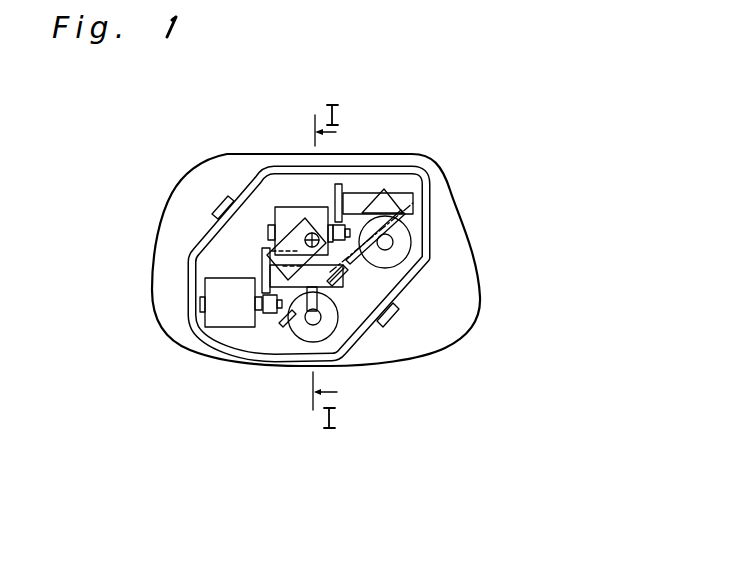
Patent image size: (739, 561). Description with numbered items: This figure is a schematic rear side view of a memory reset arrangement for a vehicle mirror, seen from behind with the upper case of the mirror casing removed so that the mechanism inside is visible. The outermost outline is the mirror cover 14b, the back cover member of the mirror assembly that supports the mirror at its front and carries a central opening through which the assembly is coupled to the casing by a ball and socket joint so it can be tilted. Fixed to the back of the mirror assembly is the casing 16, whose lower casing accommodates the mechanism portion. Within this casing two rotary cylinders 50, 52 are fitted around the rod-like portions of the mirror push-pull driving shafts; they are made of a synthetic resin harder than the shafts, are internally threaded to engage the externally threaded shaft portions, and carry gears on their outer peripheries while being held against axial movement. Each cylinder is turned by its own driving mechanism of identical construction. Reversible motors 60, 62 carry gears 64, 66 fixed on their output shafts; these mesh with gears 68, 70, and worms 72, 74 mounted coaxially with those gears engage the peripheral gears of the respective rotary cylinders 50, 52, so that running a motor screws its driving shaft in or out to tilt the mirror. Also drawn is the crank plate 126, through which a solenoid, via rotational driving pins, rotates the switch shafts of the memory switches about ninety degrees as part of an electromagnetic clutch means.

The mirror cover 14b is at (460, 270).
The casing 16 is at (369, 339).
The rotary cylinder 50 is at (330, 322).
The rotary cylinder 52 is at (402, 237).
The reversible motor 60 is at (222, 312).
The reversible motor 62 is at (290, 210).
The gear 64 is at (269, 316).
The gear 66 is at (353, 260).
The gear 68 is at (267, 257).
The gear 70 is at (340, 193).
The worm 72 is at (342, 272).
The worm 74 is at (407, 196).
The crank plate 126 is at (280, 322).